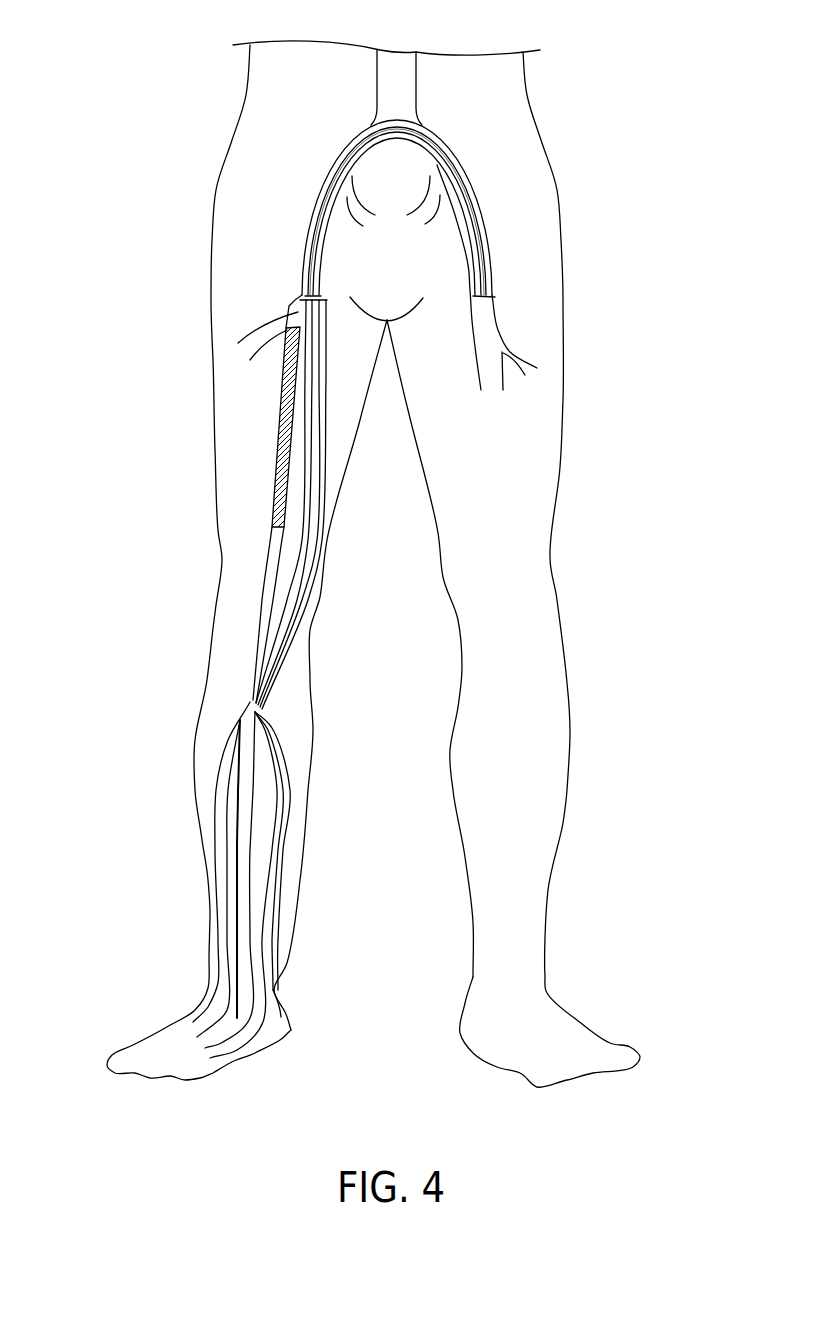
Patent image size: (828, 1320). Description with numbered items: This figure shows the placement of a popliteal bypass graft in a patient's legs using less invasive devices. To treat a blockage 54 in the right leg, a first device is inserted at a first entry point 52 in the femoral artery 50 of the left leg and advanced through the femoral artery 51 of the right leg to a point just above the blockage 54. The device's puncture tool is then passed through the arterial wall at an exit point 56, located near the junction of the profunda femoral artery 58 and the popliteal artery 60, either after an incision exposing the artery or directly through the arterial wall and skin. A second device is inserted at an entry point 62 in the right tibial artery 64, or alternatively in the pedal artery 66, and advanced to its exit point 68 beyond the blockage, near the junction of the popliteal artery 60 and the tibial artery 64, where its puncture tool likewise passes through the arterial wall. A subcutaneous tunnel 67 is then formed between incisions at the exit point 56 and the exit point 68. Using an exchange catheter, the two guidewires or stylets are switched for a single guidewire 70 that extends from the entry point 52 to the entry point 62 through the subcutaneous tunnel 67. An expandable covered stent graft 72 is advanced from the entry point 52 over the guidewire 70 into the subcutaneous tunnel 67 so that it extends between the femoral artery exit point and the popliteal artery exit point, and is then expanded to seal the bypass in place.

The femoral artery 50 is at (487, 247).
The femoral artery 51 is at (297, 270).
The first entry point 52 is at (492, 296).
The blockage 54 is at (278, 443).
The exit point 56 is at (298, 314).
The profunda femoral artery 58 is at (242, 352).
The popliteal artery 60 is at (242, 698).
The entry point 62 is at (280, 995).
The tibial artery 64 is at (283, 893).
The pedal artery 66 is at (217, 968).
The subcutaneous tunnel 67 is at (339, 448).
The exit point 68 is at (272, 700).
The guidewire 70 is at (430, 143).
The stent graft 72 is at (324, 568).